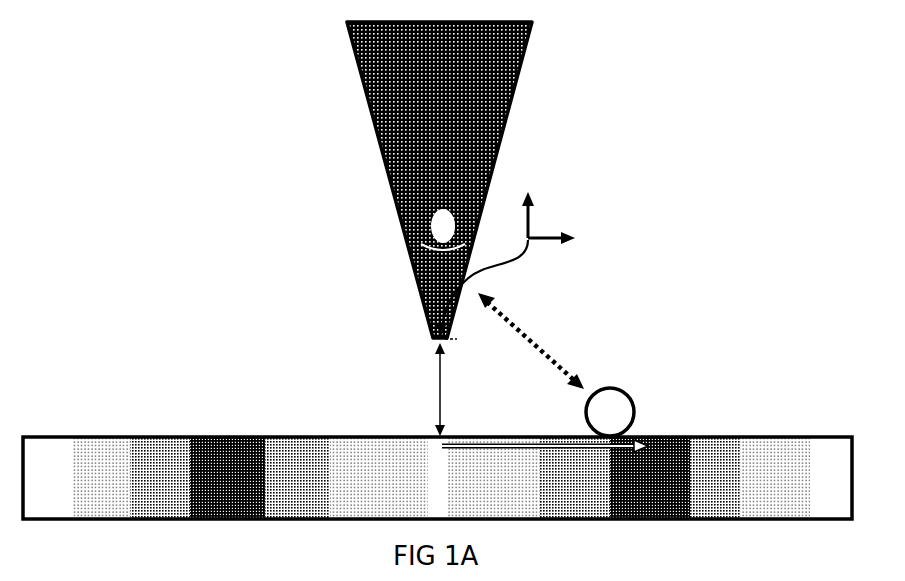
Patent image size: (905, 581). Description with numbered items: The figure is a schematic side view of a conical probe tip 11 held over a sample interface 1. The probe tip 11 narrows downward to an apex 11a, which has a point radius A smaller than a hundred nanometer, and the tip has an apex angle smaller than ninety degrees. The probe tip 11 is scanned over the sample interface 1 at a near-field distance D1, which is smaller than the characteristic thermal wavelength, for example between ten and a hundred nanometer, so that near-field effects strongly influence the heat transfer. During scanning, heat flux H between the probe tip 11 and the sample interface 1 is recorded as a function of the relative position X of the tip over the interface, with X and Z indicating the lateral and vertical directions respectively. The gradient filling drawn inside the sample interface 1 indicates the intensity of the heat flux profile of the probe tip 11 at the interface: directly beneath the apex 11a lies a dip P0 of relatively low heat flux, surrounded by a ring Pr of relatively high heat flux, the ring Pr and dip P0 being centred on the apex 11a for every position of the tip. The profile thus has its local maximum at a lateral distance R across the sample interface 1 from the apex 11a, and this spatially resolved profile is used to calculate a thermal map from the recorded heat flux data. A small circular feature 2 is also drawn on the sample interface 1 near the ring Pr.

The sample interface 1 is at (445, 491).
The particle 2 is at (617, 424).
The probe tip 11 is at (320, 190).
The apex 11a is at (426, 349).
The point radius A is at (422, 335).
The dip of relatively low heat flux P0 is at (422, 429).
The ring of relatively high heat flux Pr is at (229, 424).
The near-field distance D1 is at (481, 389).
The heat flux H is at (531, 341).
The lateral distance R is at (545, 462).
The relative position X is at (563, 239).
The Z axis Z is at (527, 201).